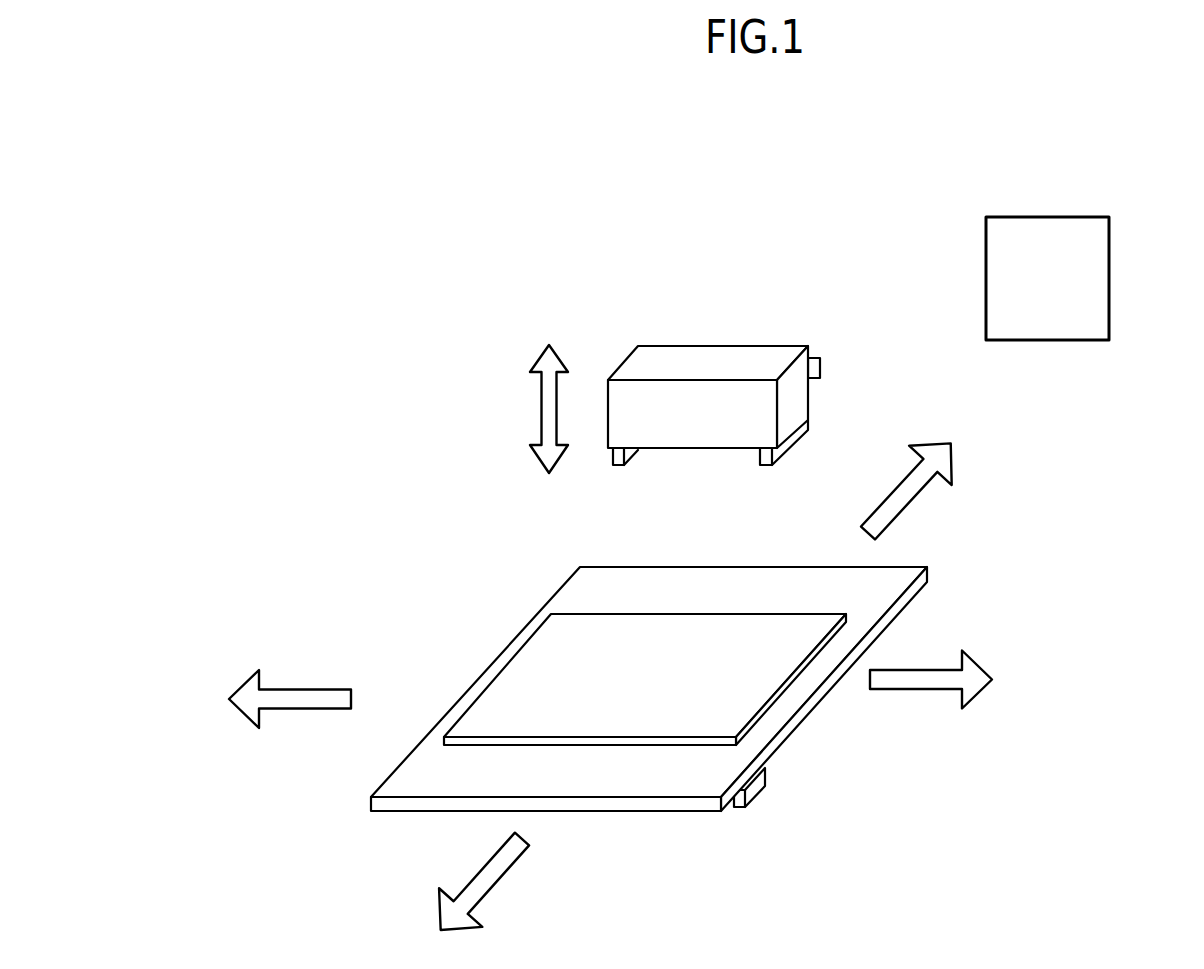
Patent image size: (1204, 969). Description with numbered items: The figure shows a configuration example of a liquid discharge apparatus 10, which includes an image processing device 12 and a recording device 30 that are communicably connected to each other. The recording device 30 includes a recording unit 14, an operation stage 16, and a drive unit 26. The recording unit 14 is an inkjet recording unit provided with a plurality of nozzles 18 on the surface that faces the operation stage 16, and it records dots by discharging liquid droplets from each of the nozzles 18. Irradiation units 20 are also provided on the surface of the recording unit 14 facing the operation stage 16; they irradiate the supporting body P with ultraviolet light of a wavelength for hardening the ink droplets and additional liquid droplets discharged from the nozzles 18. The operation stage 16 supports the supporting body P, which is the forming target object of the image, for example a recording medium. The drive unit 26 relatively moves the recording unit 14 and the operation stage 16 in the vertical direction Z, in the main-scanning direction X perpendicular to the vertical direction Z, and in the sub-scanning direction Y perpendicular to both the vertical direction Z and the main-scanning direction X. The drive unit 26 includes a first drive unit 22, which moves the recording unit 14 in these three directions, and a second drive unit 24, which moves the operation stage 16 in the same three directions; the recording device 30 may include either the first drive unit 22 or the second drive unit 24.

The liquid discharge apparatus 10 is at (1149, 126).
The image processing device 12 is at (1050, 217).
The recording unit 14 is at (772, 346).
The operation stage 16 is at (686, 785).
The nozzles 18 is at (669, 452).
The irradiation units 20 is at (798, 447).
The first drive unit 22 is at (820, 370).
The second drive unit 24 is at (755, 791).
The drive unit 26 is at (836, 605).
The recording device 30 is at (727, 226).
The supporting body P is at (747, 677).
The main-scanning direction X is at (937, 689).
The sub-scanning direction Y is at (912, 498).
The vertical direction Z is at (542, 408).